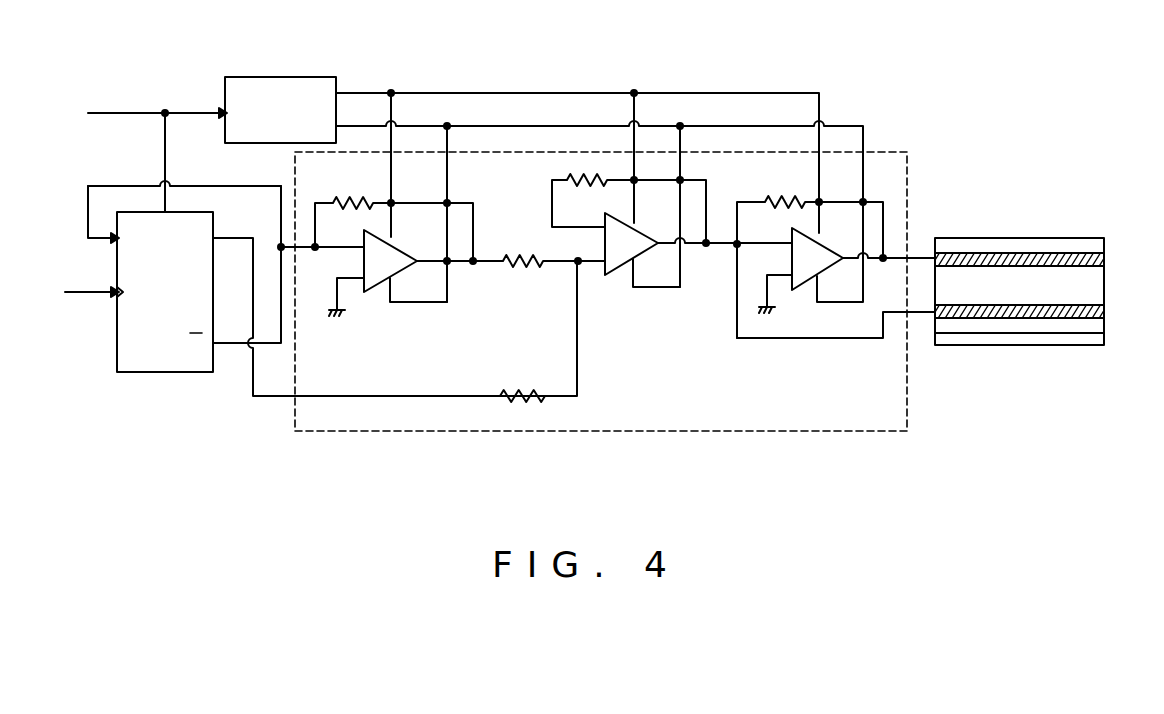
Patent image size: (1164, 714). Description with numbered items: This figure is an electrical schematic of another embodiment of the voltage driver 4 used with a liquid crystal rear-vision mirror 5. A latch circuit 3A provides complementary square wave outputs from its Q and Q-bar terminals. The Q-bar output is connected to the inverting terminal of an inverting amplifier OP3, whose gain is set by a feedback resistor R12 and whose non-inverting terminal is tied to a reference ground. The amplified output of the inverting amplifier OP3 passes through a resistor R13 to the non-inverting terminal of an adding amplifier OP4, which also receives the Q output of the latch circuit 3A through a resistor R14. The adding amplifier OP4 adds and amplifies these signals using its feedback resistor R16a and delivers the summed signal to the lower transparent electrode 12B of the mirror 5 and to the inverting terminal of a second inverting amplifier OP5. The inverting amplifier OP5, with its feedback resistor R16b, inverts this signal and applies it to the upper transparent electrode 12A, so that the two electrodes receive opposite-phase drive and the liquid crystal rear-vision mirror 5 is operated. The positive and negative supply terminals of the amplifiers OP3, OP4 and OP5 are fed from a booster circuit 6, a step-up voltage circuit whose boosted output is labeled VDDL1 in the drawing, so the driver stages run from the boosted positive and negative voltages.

The latch circuit 3A is at (163, 372).
The booster circuit 6 is at (283, 77).
The voltage driver 4 is at (610, 433).
The liquid crystal rear-vision mirror 5 is at (1044, 264).
The upper transparent electrode 12A is at (1104, 259).
The lower transparent electrode 12B is at (1104, 312).
The boosted supply voltage VDDL1 is at (371, 92).
The inverting amplifier OP3 is at (374, 293).
The adding amplifier OP4 is at (617, 276).
The inverting amplifier OP5 is at (803, 291).
The feedback resistor R12 is at (394, 221).
The resistor R13 is at (511, 253).
The resistor R14 is at (522, 388).
The feedback resistor R16a is at (629, 200).
The feedback resistor R16b is at (810, 259).